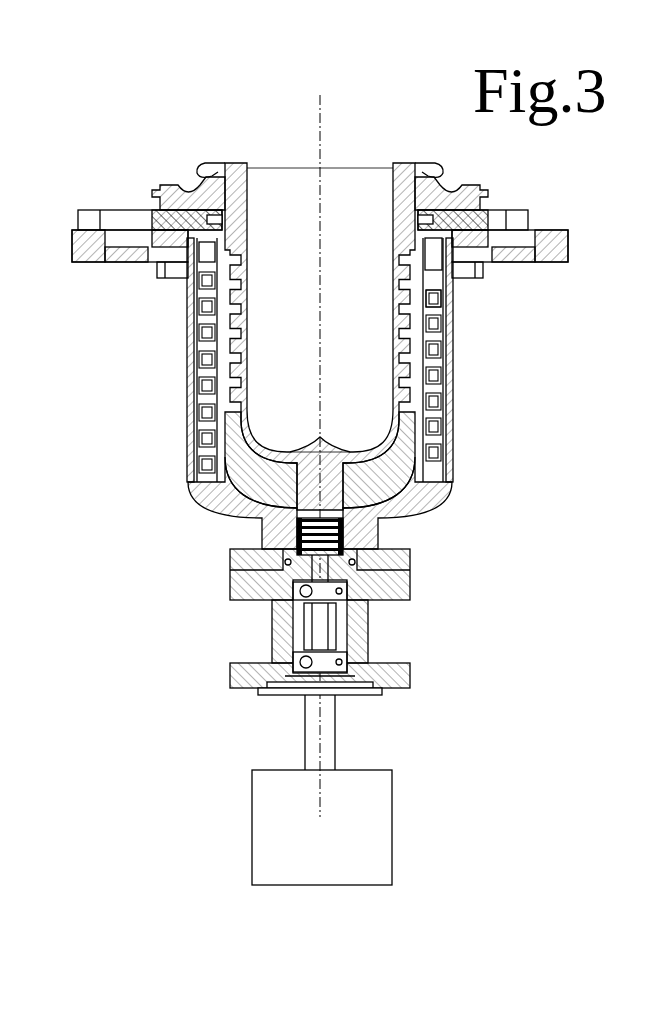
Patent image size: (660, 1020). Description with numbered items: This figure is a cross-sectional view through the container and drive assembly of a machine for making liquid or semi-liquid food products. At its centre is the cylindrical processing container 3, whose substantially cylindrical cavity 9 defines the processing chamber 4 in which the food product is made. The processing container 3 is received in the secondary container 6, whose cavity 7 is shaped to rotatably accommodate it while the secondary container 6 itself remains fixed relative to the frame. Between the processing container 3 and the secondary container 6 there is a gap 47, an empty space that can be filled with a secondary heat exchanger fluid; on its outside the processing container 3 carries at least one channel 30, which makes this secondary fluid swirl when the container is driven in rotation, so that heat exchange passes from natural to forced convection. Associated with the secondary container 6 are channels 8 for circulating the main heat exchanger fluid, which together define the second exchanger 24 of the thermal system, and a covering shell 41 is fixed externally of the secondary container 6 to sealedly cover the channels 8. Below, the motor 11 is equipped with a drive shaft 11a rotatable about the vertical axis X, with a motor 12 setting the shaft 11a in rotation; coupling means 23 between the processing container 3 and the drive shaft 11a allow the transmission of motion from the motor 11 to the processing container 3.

The processing container 3 is at (268, 238).
The processing chamber 4 is at (262, 160).
The secondary container 6 is at (213, 497).
The cavity 7 is at (387, 471).
The channels 8 is at (410, 437).
The cavity 9 is at (363, 317).
The motor 11 is at (300, 734).
The drive shaft 11a is at (325, 723).
The motor 12 is at (334, 853).
The coupling means 23 is at (187, 682).
The second exchanger 24 is at (437, 324).
The channel 30 is at (223, 263).
The covering shell 41 is at (437, 299).
The gap 47 is at (192, 463).
The vertical axis X is at (322, 138).